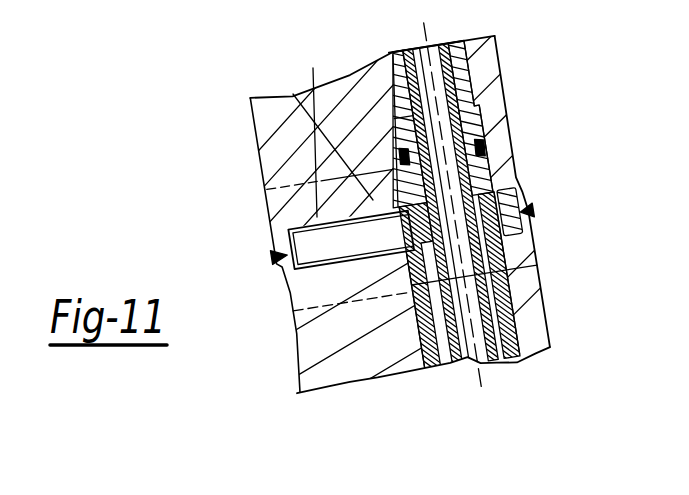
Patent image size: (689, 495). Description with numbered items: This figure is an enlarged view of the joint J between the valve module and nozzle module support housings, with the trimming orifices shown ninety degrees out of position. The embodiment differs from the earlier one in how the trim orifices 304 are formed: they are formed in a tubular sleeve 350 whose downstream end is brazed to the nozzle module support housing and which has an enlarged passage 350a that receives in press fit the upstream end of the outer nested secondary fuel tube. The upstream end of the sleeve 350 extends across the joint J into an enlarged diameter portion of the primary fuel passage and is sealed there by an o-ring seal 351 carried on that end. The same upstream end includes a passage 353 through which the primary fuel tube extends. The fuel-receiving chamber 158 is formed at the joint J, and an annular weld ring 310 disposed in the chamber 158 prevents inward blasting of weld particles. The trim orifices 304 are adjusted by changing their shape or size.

The trim orifices 304 is at (293, 96).
The weld ring 310 is at (288, 322).
The fuel-receiving chamber 158 is at (280, 228).
The passage 353 is at (503, 185).
The o-ring seal 351 is at (517, 186).
The tubular sleeve 350 is at (532, 212).
The enlarged passage 350a is at (539, 284).
The joint J is at (270, 250).